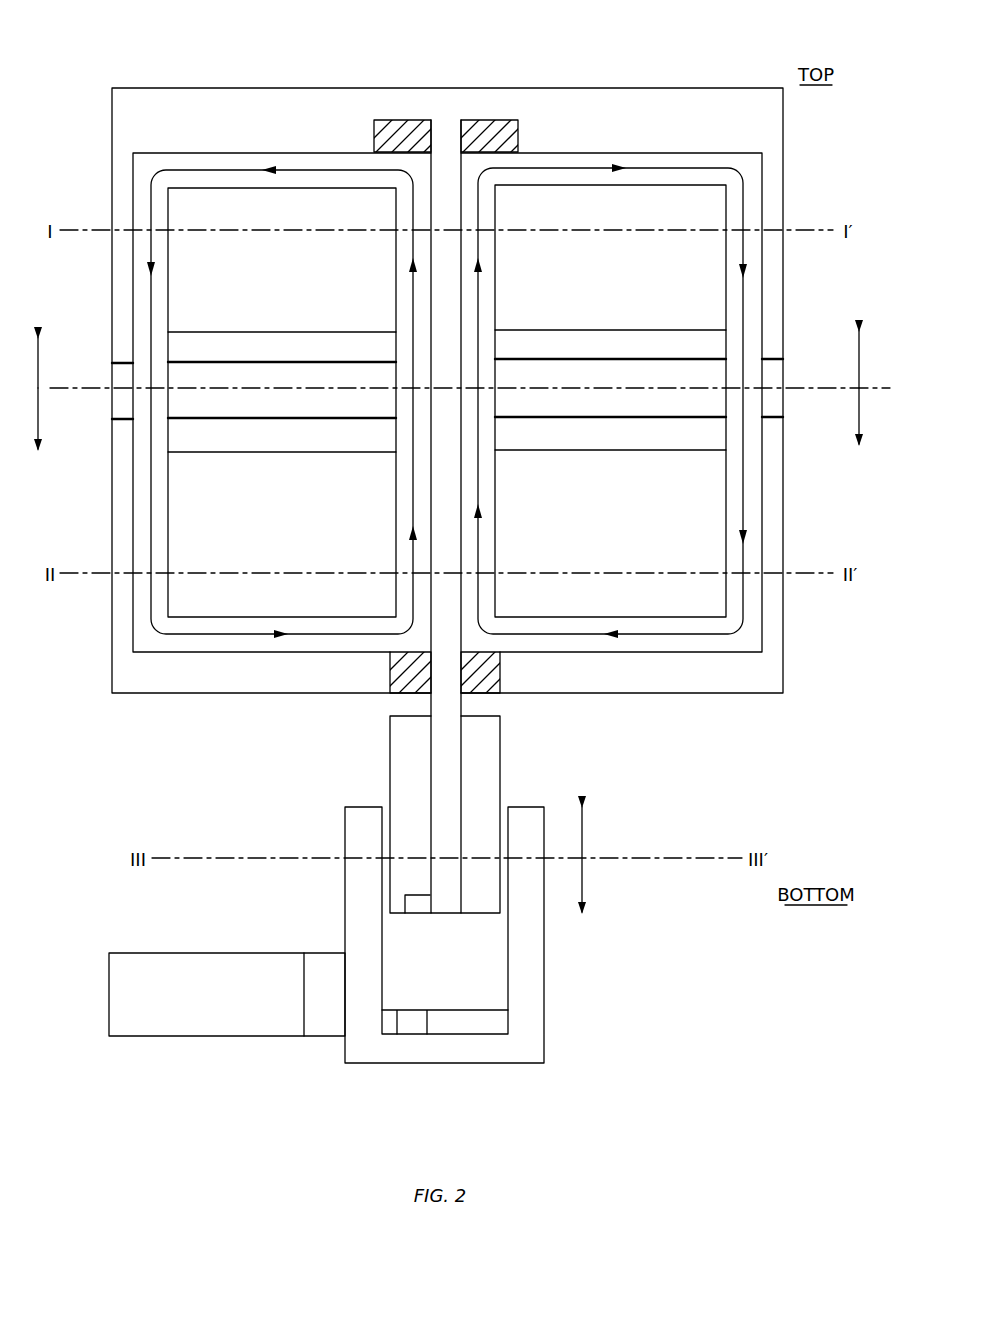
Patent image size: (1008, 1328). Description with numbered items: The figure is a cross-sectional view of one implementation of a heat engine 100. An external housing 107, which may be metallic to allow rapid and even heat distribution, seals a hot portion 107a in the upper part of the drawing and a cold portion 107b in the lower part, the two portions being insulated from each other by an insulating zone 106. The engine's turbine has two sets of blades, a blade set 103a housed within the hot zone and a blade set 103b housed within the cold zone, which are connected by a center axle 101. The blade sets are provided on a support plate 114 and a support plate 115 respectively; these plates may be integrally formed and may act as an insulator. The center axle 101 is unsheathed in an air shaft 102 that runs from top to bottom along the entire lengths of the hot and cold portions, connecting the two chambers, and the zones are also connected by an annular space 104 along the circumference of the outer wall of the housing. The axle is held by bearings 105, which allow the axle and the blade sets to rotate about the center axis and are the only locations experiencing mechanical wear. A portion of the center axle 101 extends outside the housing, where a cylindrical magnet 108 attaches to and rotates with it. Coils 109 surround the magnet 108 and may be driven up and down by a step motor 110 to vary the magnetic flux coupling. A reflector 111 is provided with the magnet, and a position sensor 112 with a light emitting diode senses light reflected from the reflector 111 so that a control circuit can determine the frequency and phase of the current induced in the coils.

The heat engine 100 is at (464, 24).
The center axle 101 is at (447, 127).
The air shaft 102 is at (403, 433).
The blade set 103a is at (259, 293).
The blade set 103b is at (259, 531).
The annular space 104 is at (142, 163).
The bearings 105 is at (497, 122).
The insulating zone 106 is at (258, 408).
The external housing 107 is at (678, 88).
The hot portion 107a is at (448, 347).
The cold portion 107b is at (449, 434).
The cylindrical magnet 108 is at (490, 750).
The coils 109 is at (530, 990).
The step motor 110 is at (191, 1002).
The reflector 111 is at (415, 913).
The position sensor 112 is at (412, 1034).
The support plate 114 is at (273, 357).
The support plate 115 is at (228, 448).